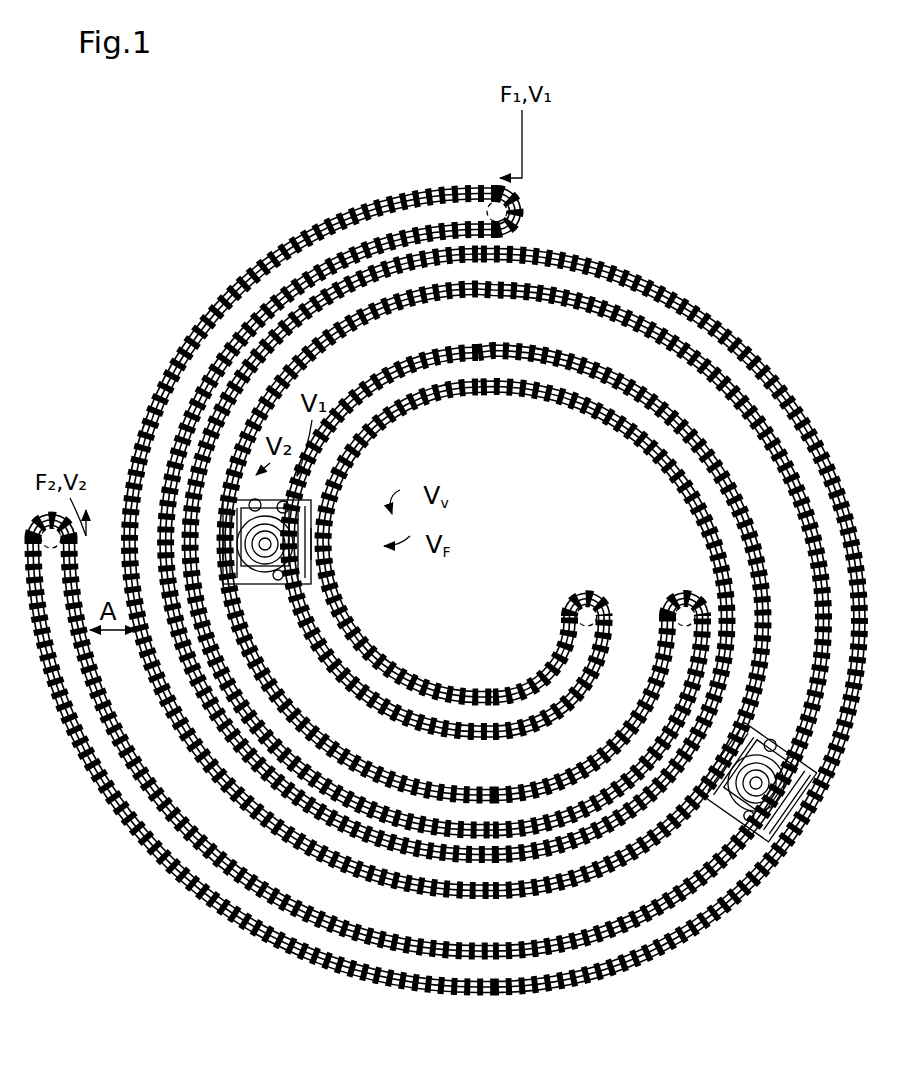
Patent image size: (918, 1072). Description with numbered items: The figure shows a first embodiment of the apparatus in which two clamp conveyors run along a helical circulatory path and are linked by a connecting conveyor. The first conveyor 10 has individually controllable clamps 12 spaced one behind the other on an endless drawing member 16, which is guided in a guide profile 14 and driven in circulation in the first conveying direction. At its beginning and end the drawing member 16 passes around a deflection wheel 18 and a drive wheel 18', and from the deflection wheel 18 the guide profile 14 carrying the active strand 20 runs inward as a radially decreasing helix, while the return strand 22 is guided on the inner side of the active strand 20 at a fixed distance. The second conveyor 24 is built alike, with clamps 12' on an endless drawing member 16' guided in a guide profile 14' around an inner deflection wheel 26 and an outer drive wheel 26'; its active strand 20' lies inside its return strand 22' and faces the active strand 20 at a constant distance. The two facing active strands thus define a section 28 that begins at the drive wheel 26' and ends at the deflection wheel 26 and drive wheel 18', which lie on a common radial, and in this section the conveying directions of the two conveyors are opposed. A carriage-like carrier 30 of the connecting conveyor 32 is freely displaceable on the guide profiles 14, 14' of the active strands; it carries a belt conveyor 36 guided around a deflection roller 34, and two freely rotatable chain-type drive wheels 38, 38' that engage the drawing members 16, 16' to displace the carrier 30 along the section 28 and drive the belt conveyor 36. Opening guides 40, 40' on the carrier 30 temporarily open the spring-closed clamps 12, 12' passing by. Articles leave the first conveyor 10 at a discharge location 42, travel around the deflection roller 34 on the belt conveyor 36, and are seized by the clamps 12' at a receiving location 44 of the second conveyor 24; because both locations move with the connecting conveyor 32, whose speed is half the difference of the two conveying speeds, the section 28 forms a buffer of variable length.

The first conveyor 10 is at (219, 278).
The clamps 12 is at (476, 434).
The guide profile 14 is at (310, 533).
The endless drawing member 16 is at (328, 506).
The deflection wheel 18 is at (547, 196).
The drive wheel 18' is at (572, 579).
The active strand 20 is at (441, 604).
The return strand 22 is at (437, 555).
The second conveyor 24 is at (207, 923).
The deflection wheel 26 is at (676, 579).
The drive wheel 26' is at (78, 553).
The section 28 is at (215, 818).
The carrier 30 is at (257, 580).
The connecting conveyor 32 is at (300, 496).
The deflection roller 34 is at (323, 547).
The belt conveyor 36 is at (248, 587).
The drive wheel 38 is at (186, 460).
The drive wheel 38' is at (756, 781).
The opening guide 40 is at (338, 536).
The opening guide 40' is at (189, 446).
The discharge location 42 is at (283, 508).
The receiving location 44 is at (222, 562).
The clamps 12' is at (400, 726).
The guide profile 14' is at (279, 747).
The endless drawing member 16' is at (261, 765).
The active strand 20' is at (322, 545).
The return strand 22' is at (268, 558).